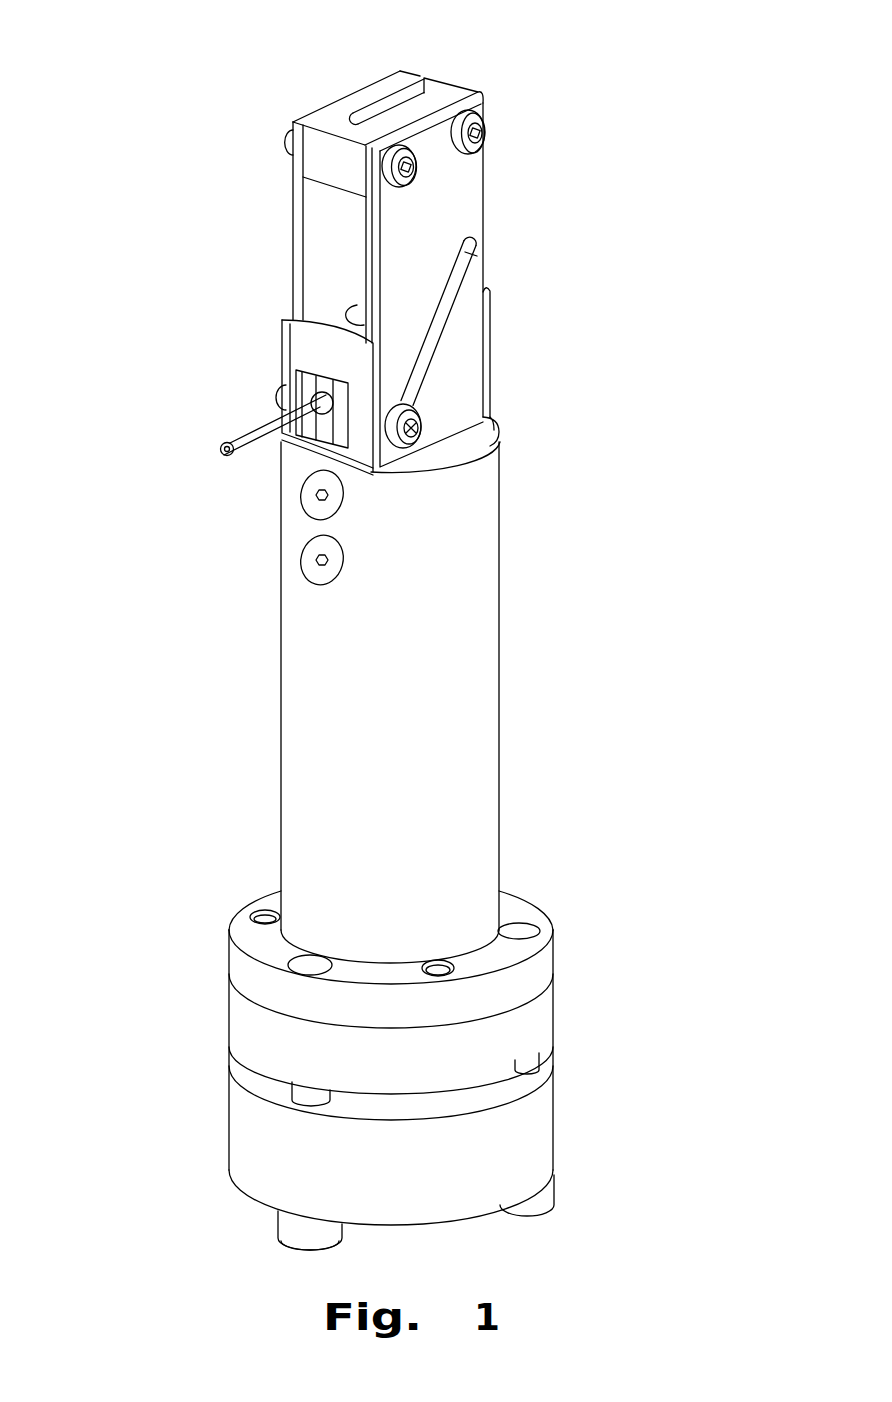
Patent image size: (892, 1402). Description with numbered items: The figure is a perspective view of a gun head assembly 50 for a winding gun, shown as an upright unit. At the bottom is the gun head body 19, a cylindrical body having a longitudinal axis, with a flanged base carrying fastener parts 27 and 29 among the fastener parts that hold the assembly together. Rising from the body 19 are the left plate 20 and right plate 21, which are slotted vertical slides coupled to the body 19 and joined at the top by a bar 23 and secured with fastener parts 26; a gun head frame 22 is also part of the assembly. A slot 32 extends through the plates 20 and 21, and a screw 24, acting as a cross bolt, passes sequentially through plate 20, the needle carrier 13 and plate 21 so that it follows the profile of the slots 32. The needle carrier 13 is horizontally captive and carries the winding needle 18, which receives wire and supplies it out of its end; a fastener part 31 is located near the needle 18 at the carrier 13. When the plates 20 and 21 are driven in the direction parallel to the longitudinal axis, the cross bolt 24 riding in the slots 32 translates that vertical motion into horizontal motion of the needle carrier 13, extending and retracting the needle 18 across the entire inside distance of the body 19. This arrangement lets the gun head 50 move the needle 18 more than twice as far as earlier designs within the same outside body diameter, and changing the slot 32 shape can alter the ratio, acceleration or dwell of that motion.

The gun head assembly 50 is at (203, 189).
The right plate 21 is at (347, 98).
The bar 23 is at (397, 88).
The fastener parts 26 is at (486, 119).
The left plate 20 is at (447, 181).
The slot 32 is at (451, 309).
The gun head frame 22 is at (493, 387).
The screw 24 is at (413, 430).
The needle carrier 13 is at (305, 364).
The fastener part 31 is at (276, 397).
The winding needle 18 is at (222, 443).
The fastener part 29 is at (315, 563).
The gun head body 19 is at (500, 735).
The fastener part 27 is at (437, 961).